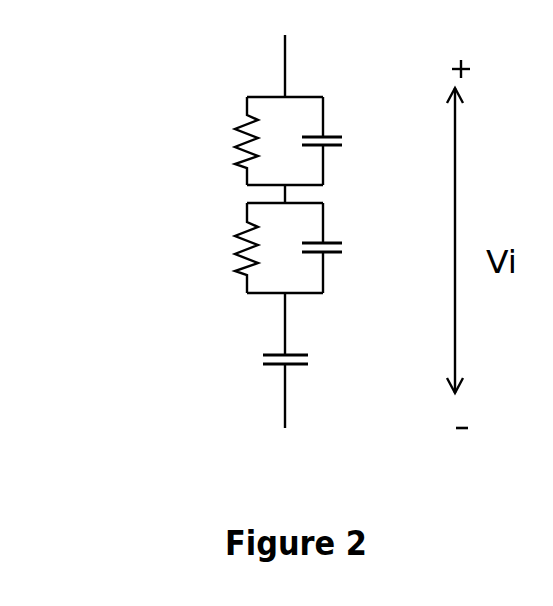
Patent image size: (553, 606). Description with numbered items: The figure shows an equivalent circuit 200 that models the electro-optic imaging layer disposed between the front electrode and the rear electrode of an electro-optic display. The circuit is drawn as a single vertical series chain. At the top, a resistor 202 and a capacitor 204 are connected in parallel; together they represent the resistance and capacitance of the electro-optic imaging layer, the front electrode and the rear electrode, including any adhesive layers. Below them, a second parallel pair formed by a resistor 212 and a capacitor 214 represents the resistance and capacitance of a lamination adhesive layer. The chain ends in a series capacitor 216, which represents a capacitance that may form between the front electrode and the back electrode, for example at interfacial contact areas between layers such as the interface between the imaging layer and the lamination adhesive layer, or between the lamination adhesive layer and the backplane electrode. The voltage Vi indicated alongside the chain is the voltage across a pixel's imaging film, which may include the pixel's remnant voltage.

The equivalent circuit model 200 is at (104, 48).
The resistor 202 is at (226, 133).
The capacitor 204 is at (348, 137).
The resistor 212 is at (230, 240).
The capacitor 214 is at (348, 247).
The capacitor 216 is at (323, 357).